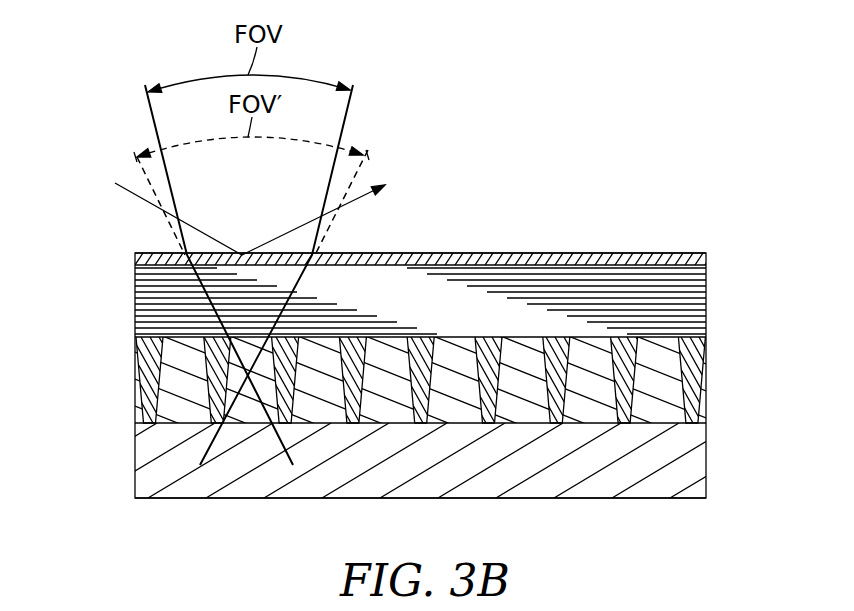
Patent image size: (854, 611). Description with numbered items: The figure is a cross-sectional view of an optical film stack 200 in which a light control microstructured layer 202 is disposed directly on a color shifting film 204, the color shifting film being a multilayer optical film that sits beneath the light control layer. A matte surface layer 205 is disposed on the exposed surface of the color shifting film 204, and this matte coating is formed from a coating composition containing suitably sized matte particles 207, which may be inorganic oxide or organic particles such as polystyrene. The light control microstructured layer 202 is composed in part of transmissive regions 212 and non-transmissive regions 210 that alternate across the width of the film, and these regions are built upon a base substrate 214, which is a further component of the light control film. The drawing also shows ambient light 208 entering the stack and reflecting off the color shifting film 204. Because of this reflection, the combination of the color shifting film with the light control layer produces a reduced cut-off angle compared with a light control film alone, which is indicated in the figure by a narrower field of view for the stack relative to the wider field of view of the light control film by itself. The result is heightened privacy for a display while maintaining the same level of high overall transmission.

The film stack 200 is at (635, 110).
The light control microstructured layer 202 is at (426, 360).
The color shifting film 204 is at (712, 264).
The matte surface layer 205 is at (136, 256).
The matte particles 207 is at (542, 254).
The ambient light 208 is at (123, 187).
The non-transmissive regions 210 is at (617, 425).
The transmissive regions 212 is at (517, 413).
The base substrate 214 is at (137, 438).